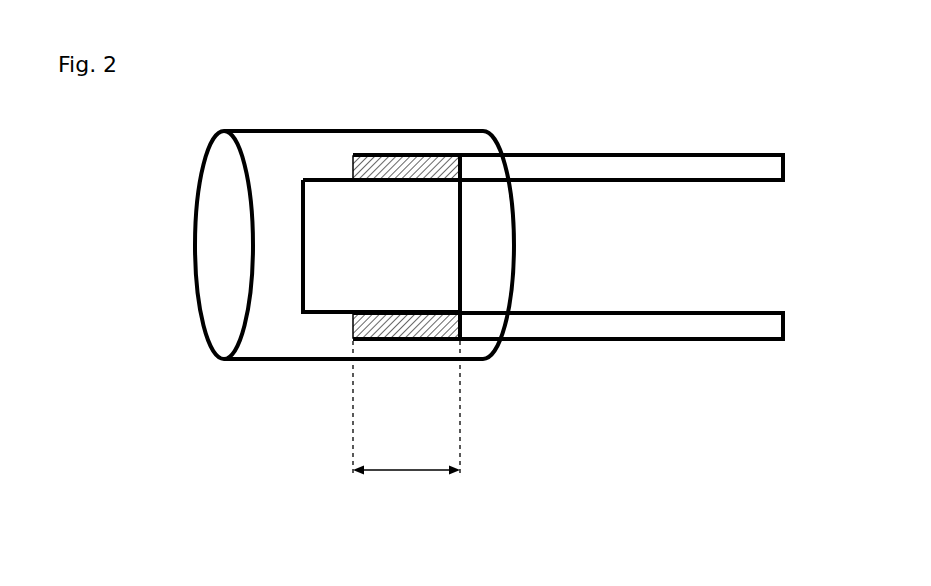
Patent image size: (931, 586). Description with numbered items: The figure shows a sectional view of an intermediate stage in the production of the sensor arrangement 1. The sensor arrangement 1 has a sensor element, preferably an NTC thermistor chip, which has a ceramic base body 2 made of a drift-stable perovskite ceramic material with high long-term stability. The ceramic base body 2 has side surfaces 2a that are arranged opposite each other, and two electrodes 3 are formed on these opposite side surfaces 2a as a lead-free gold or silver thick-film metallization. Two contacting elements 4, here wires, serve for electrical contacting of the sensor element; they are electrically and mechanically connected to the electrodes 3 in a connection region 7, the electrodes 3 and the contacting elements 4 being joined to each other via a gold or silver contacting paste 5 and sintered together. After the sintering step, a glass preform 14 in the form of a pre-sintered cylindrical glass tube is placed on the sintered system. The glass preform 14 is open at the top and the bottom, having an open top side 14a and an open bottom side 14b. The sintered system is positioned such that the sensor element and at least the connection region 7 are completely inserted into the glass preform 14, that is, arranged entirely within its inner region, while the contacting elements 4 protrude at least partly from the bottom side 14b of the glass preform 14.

The sensor arrangement 1 is at (154, 247).
The ceramic base body 2 is at (315, 200).
The side surfaces 2a is at (339, 178).
The electrodes 3 is at (308, 318).
The contacting elements 4 is at (664, 153).
The contacting paste 5 is at (392, 153).
The connection region 7 is at (400, 475).
The glass preform 14 is at (207, 207).
The open top side 14a is at (219, 299).
The open bottom side 14b is at (525, 243).